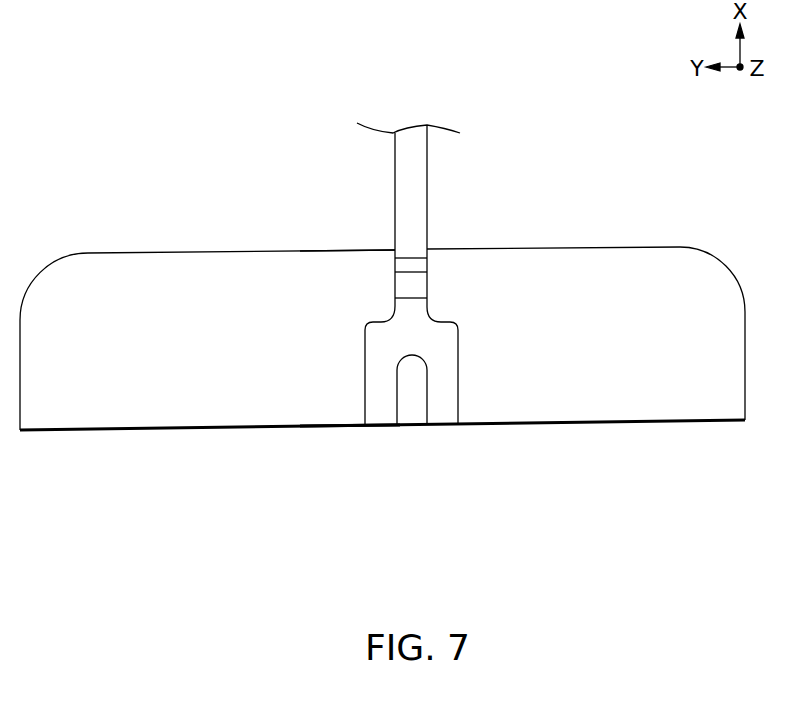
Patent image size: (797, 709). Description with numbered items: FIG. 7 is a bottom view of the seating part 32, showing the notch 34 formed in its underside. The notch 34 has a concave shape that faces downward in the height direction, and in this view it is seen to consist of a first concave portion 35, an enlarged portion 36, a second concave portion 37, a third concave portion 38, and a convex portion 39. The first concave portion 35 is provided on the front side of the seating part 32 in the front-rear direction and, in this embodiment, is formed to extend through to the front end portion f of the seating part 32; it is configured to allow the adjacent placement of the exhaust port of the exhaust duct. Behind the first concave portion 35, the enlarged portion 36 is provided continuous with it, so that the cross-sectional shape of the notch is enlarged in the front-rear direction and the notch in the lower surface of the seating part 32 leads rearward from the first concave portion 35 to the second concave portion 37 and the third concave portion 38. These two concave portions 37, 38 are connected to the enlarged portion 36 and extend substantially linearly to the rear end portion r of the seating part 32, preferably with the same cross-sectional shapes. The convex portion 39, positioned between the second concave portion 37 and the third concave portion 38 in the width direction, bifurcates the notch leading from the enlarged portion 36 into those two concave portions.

The seating part 32 is at (246, 244).
The notch 34 is at (480, 201).
The first concave portion 35 is at (412, 317).
The enlarged portion 36 is at (412, 338).
The second concave portion 37 is at (382, 385).
The third concave portion 38 is at (450, 415).
The convex portion 39 is at (412, 402).
The front end portion f is at (340, 250).
The rear end portion r is at (347, 428).